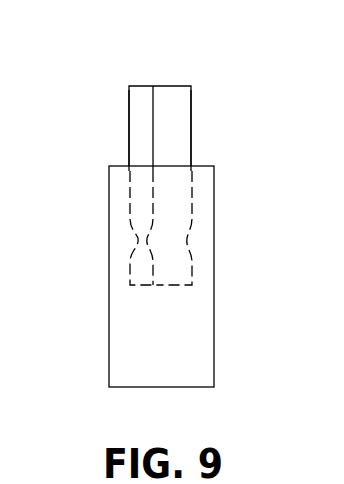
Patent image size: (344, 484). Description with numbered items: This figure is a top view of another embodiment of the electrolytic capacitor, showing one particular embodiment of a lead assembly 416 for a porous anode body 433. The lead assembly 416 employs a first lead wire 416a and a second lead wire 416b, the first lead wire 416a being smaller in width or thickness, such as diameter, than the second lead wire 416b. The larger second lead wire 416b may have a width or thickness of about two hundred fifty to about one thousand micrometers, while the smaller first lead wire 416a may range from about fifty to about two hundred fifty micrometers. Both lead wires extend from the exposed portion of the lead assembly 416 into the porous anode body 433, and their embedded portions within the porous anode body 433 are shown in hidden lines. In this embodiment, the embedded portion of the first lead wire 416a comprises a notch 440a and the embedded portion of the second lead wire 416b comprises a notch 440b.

The lead assembly 416 is at (180, 69).
The first lead wire 416a is at (142, 125).
The second lead wire 416b is at (176, 121).
The porous anode body 433 is at (250, 355).
The notch 440a is at (138, 244).
The notch 440b is at (188, 250).